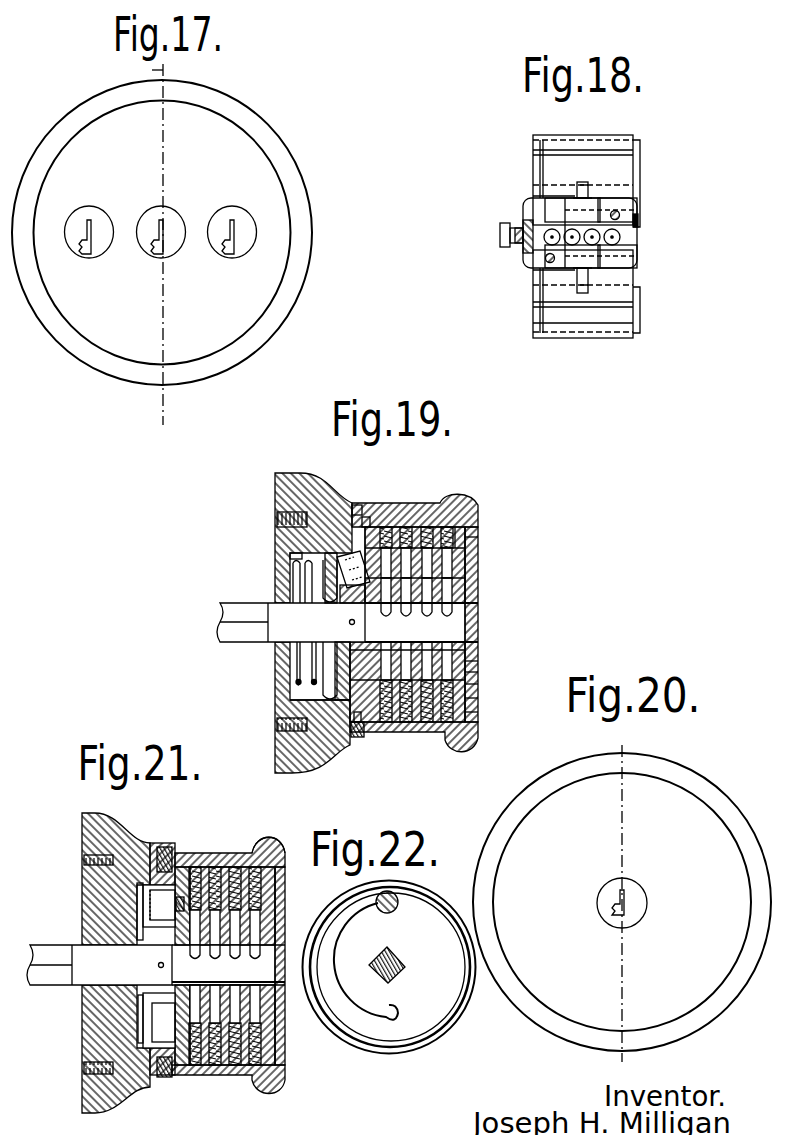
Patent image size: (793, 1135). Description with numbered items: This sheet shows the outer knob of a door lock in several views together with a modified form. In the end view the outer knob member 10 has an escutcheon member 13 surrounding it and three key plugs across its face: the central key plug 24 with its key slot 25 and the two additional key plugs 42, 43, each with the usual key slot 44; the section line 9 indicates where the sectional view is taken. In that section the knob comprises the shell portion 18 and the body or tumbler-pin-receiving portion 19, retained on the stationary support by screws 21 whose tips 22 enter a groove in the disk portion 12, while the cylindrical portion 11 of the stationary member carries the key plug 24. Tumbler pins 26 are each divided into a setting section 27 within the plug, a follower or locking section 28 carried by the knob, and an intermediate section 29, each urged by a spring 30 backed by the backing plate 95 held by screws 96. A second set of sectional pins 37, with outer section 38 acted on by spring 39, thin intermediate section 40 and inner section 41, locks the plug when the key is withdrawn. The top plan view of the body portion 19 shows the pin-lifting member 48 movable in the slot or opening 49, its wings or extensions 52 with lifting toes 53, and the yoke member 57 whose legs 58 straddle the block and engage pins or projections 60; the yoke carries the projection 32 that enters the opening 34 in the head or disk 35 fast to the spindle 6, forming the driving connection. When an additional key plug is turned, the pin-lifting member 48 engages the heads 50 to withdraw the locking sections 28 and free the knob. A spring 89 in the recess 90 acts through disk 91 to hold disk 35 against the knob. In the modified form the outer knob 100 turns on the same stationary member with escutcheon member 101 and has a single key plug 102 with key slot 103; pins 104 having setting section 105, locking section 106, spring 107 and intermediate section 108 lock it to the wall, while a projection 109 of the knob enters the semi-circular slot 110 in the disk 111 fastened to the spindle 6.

In FIG. 19, the spindle 6 is at (243, 603).
In FIG. 21, the spindle 6 is at (56, 980).
In FIG. 22, the spindle 6 is at (405, 968).
In FIG. 17, the section line 9— 9 is at (153, 251).
In FIG. 17, the outer knob member 10 is at (270, 190).
In FIG. 19, the outer knob member 10 is at (458, 501).
In FIG. 19, the cylindrical portion 11 is at (474, 588).
In FIG. 21, the cylindrical portion 11 is at (267, 1001).
In FIG. 19, the head or disk portion 12 is at (352, 720).
In FIG. 21, the head or disk portion 12 is at (153, 1058).
In FIG. 17, the outer hub or escutcheon member 13 is at (253, 125).
In FIG. 19, the outer hub or escutcheon member 13 is at (293, 479).
In FIG. 19, the shell portion 18 is at (398, 733).
In FIG. 18, the body or tumbler-pin-receiving portion 19 is at (641, 207).
In FIG. 19, the body or tumbler-pin-receiving portion 19 is at (472, 699).
In FIG. 19, the screws 21 is at (358, 510).
In FIG. 20, the screws 21 is at (621, 903).
In FIG. 19, the tips 22 is at (366, 524).
In FIG. 17, the key plug 24 is at (167, 215).
In FIG. 18, the key plug 24 is at (641, 226).
In FIG. 19, the key plug 24 is at (474, 601).
In FIG. 17, the key slot 25 is at (163, 246).
In FIG. 19, the tumbler pins 26 is at (474, 565).
In FIG. 19, the setting section 27 is at (452, 618).
In FIG. 19, the follower or locking section 28 is at (474, 577).
In FIG. 19, the intermediate section 29 is at (480, 605).
In FIG. 19, the spring 30 is at (428, 540).
In FIG. 18, the projection 32 is at (503, 228).
In FIG. 19, the projection 32 is at (292, 558).
In FIG. 19, the opening 34 is at (338, 552).
In FIG. 19, the head or disk 35 is at (300, 660).
In FIG. 19, the sectional pins 37 is at (474, 669).
In FIG. 19, the outer section 38 is at (479, 682).
In FIG. 19, the spring 39 is at (474, 719).
In FIG. 19, the thin intermediate section 40 is at (455, 661).
In FIG. 19, the inner section 41 is at (455, 648).
In FIG. 17, the key plug 42 is at (228, 212).
In FIG. 18, the key plug 42 is at (636, 140).
In FIG. 17, the key plug 43 is at (82, 213).
In FIG. 18, the key plug 43 is at (641, 327).
In FIG. 17, the key slot 44 is at (90, 240).
In FIG. 18, the pin-lifting member 48 is at (622, 237).
In FIG. 19, the pin-lifting member 48 is at (480, 530).
In FIG. 18, the slot or opening 49 is at (637, 240).
In FIG. 19, the heads or enlarged portions 50 is at (392, 540).
In FIG. 18, the wing or extension 52 is at (568, 208).
In FIG. 18, the lifting toe 53 is at (605, 197).
In FIG. 18, the yoke member 57 is at (518, 250).
In FIG. 18, the legs 58 is at (560, 197).
In FIG. 18, the pins or projections 60 is at (578, 185).
In FIG. 19, the spring 89 is at (298, 668).
In FIG. 19, the recess 90 is at (306, 688).
In FIG. 19, the disk 91 is at (326, 698).
In FIG. 19, the backing plate 95 is at (472, 537).
In FIG. 18, the screws 96 is at (619, 211).
In FIG. 20, the outer knob 100 is at (700, 809).
In FIG. 21, the outer knob 100 is at (232, 1082).
In FIG. 20, the outer escutcheon member 101 is at (558, 774).
In FIG. 21, the outer escutcheon member 101 is at (118, 845).
In FIG. 20, the key plug 102 is at (635, 890).
In FIG. 21, the key plug 102 is at (273, 945).
In FIG. 20, the key slot 103 is at (625, 903).
In FIG. 21, the key slot 103 is at (277, 987).
In FIG. 21, the pins 104 is at (258, 918).
In FIG. 21, the setting section 105 is at (258, 960).
In FIG. 21, the locking section 106 is at (269, 850).
In FIG. 21, the spring 107 is at (252, 870).
In FIG. 21, the intermediate section 108 is at (232, 966).
In FIG. 21, the projection 109 is at (143, 901).
In FIG. 22, the projection 109 is at (395, 900).
In FIG. 21, the semi-circular slot 110 is at (138, 1030).
In FIG. 22, the semi-circular slot 110 is at (350, 1018).
In FIG. 21, the disk 111 is at (137, 916).
In FIG. 22, the disk 111 is at (423, 1020).